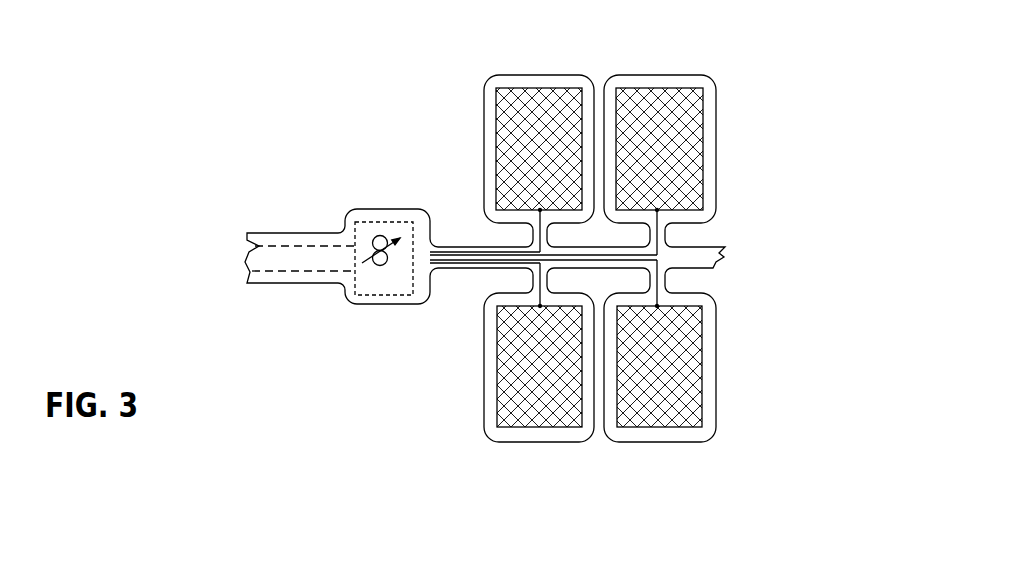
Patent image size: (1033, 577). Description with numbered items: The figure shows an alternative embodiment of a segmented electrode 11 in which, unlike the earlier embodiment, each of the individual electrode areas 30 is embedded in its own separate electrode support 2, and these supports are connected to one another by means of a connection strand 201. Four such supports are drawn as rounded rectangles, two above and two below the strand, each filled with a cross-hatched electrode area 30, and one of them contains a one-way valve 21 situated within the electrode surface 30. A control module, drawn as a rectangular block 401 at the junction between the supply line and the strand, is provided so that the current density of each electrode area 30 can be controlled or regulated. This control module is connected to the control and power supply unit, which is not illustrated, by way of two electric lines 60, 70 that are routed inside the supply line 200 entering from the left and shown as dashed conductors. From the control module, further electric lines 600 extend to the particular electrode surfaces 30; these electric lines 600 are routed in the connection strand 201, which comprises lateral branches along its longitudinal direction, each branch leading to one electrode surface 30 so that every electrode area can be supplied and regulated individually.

The segmented electrode 11 is at (737, 110).
The one-way valve 21 is at (535, 150).
The electrode area 30 is at (677, 155).
The electrode support 2 is at (707, 192).
The connection strand 201 is at (705, 270).
The electric lines 600 is at (468, 246).
The supply line 200 is at (295, 233).
The electric line 70 is at (257, 246).
The electric line 60 is at (250, 263).
The connector 401 is at (345, 300).